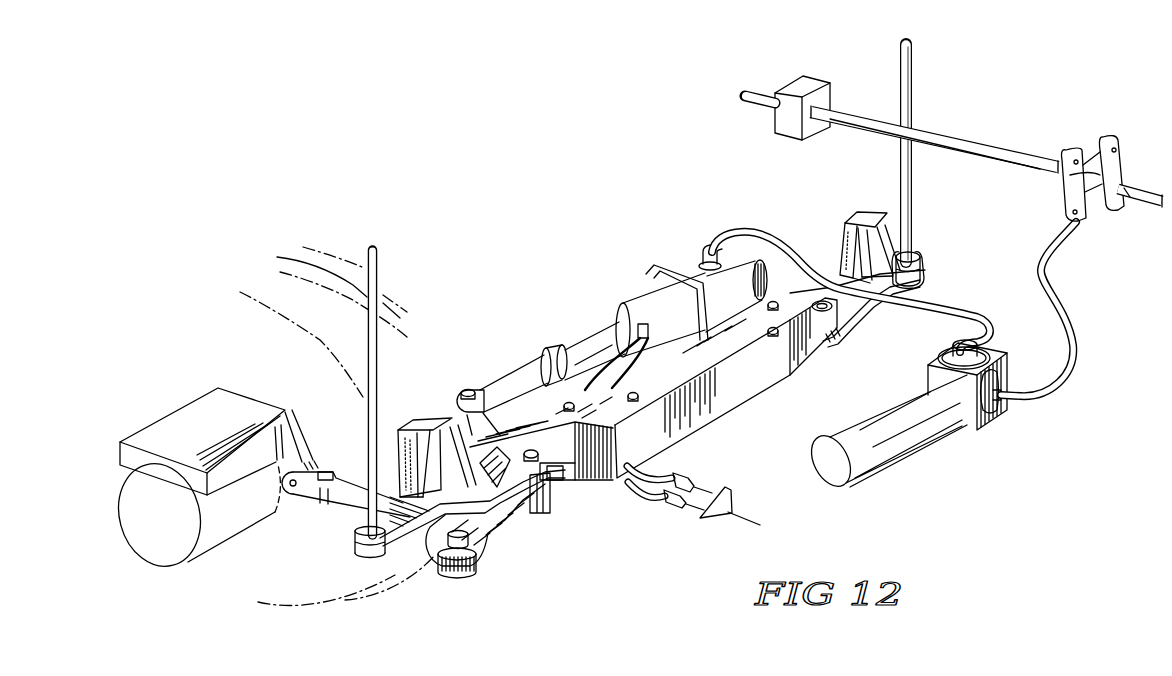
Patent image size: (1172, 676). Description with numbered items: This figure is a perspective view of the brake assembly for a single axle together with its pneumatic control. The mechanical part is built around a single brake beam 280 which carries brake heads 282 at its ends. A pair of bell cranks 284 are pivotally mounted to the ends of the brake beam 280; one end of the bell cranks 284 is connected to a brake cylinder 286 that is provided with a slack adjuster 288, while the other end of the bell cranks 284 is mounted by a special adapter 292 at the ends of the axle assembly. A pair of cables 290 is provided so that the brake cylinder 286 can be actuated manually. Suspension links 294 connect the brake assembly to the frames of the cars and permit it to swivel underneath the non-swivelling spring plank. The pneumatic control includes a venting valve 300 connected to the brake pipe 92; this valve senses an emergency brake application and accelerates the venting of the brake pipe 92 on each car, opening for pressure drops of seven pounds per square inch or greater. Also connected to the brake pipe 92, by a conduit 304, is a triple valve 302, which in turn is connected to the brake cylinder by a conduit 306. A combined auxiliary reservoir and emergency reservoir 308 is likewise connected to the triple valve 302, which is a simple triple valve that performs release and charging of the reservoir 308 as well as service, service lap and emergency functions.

The brake pipe 92 is at (980, 145).
The brake beam 280 is at (740, 396).
The brake heads 282 is at (432, 425).
The bell cranks 284 is at (474, 565).
The brake cylinder 286 is at (690, 267).
The slack adjuster 288 is at (640, 300).
The cables 290 is at (690, 477).
The special adapter 292 is at (192, 403).
The suspension links 294 is at (378, 270).
The venting valve 300 is at (812, 82).
The triple valve 302 is at (1007, 368).
The conduit 304 is at (1060, 255).
The conduit 306 is at (973, 313).
The combined auxiliary reservoir and emergency reservoir 308 is at (907, 443).